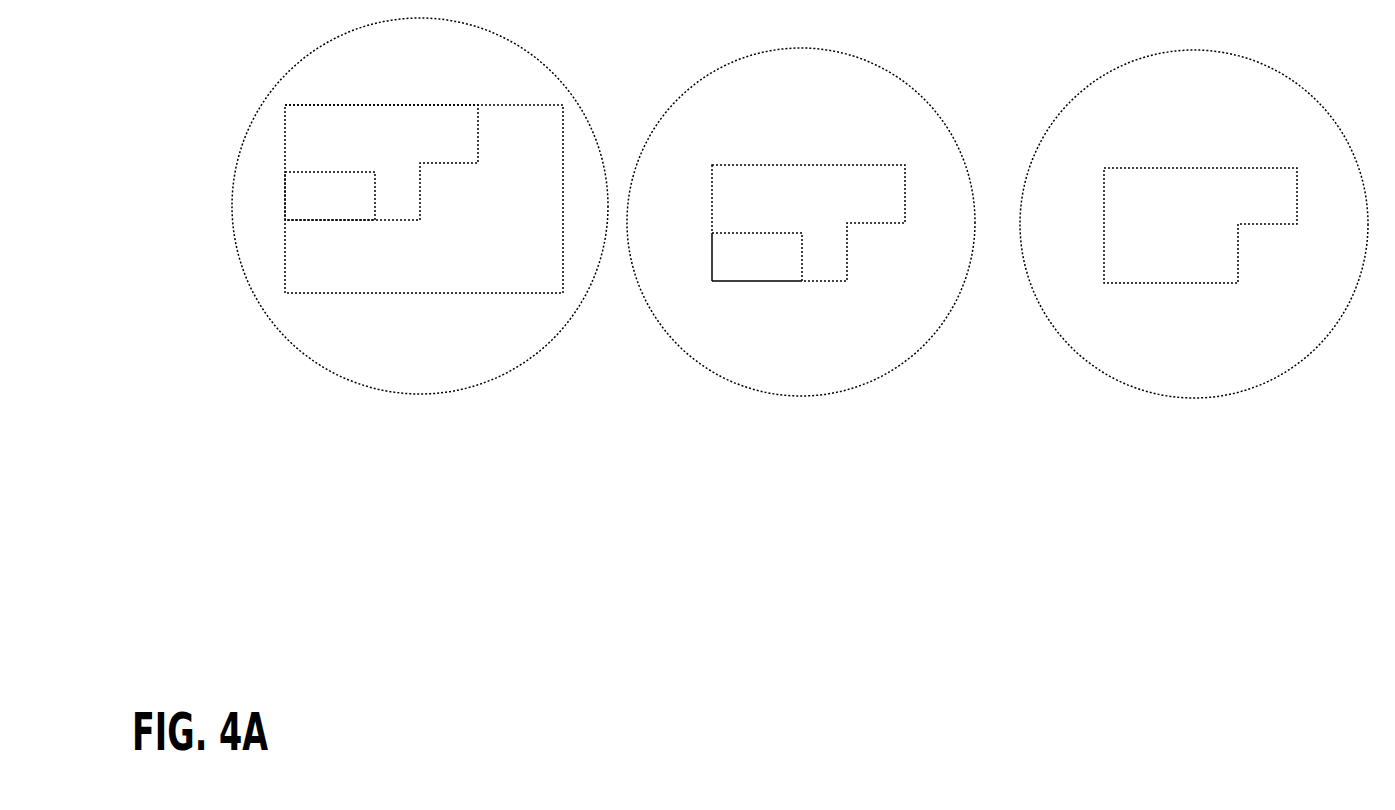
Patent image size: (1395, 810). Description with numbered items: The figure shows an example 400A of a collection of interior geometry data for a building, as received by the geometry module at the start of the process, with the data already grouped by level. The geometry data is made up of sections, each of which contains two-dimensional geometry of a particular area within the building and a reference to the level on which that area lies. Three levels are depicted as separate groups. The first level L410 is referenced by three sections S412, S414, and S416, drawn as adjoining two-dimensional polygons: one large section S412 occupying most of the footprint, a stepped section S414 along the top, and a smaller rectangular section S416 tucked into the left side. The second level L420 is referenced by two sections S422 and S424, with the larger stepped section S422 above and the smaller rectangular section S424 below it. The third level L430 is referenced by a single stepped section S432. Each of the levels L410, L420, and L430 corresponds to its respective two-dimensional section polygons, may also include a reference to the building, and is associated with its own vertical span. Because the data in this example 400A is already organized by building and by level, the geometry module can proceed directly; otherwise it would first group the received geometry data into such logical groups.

The grouped interior geometry data example 400A is at (175, 696).
The first level L410 is at (419, 230).
The second level L420 is at (800, 243).
The third level L430 is at (1189, 245).
The section S412 is at (497, 144).
The section S414 is at (365, 144).
The section S416 is at (308, 206).
The section S422 is at (778, 196).
The section S424 is at (731, 266).
The section S432 is at (1168, 202).